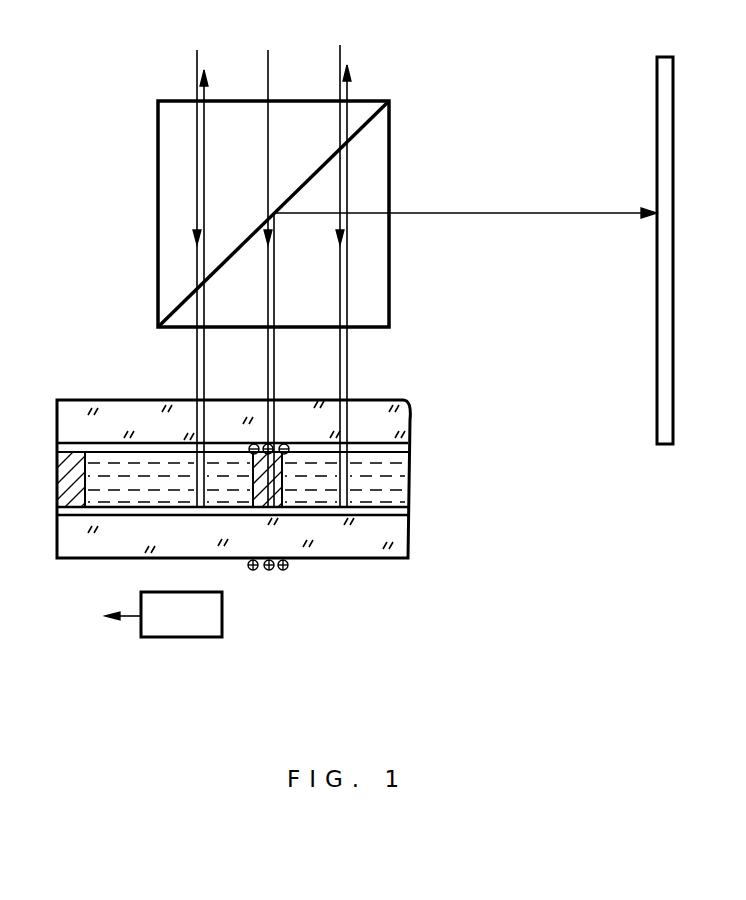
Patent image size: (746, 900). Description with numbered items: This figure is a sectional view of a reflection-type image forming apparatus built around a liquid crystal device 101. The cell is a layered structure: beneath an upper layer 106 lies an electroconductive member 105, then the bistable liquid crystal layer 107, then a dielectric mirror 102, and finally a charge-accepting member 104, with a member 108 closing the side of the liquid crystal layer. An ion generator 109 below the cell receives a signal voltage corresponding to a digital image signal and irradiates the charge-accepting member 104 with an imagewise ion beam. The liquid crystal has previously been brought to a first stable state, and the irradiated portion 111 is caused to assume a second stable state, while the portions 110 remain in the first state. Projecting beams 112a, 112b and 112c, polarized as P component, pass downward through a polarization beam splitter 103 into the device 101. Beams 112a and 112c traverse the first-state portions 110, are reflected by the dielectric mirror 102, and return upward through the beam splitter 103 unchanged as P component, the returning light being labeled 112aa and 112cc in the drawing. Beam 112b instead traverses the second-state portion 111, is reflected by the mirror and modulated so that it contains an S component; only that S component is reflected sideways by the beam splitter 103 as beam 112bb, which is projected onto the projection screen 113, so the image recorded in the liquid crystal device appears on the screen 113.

The liquid crystal device 101 is at (424, 402).
The dielectric mirror 102 is at (403, 508).
The polarization beam splitter 103 is at (136, 180).
The charge-accepting member 104 is at (405, 540).
The electroconductive member 105 is at (405, 447).
The upper glass substrate 106 is at (72, 415).
The liquid crystal layer 107 is at (405, 474).
The sealing spacer 108 is at (57, 495).
The ion generator 109 is at (234, 626).
The liquid crystal portion in first stable state 110 is at (122, 497).
The liquid crystal portion in second stable state 111 is at (280, 500).
The projecting beam 112a is at (197, 57).
The reflected light beam 112aa is at (206, 90).
The projecting beam 112b is at (270, 62).
The S-component beam 112bb is at (495, 213).
The projecting beam 112c is at (343, 58).
The reflected light beam 112cc is at (349, 90).
The projection screen 113 is at (657, 75).